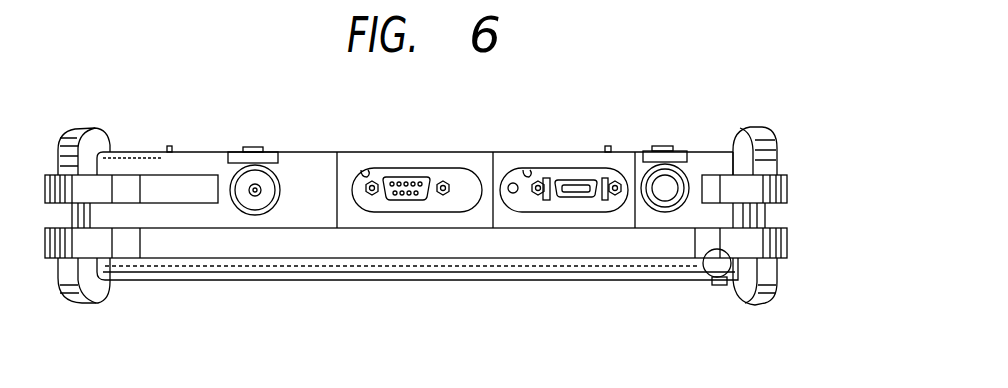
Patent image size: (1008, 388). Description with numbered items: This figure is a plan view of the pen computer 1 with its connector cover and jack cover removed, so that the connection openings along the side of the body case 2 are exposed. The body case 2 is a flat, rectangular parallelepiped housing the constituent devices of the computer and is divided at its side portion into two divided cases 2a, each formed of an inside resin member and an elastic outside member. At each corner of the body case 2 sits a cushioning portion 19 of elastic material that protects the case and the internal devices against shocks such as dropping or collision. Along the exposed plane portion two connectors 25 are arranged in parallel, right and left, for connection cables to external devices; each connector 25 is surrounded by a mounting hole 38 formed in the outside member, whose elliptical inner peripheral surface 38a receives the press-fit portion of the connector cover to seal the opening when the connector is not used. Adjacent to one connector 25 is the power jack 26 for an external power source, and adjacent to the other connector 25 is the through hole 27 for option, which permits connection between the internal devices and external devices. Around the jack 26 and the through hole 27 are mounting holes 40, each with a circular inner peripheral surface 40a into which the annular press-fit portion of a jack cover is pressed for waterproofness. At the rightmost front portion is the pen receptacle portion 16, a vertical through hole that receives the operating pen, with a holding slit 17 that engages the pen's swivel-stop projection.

The pen computer 1 is at (460, 284).
The body case 2 is at (392, 273).
The divided case 2a is at (183, 160).
The pen receptacle portion 16 is at (705, 266).
The holding slit 17 is at (717, 287).
The cushioning portion 19 is at (82, 128).
The connector 25 is at (407, 177).
The power jack 26 is at (253, 172).
The through hole for option 27 is at (663, 184).
The mounting hole 38 is at (463, 180).
The elliptical inner peripheral surface 38a is at (365, 170).
The mounting hole 40 is at (285, 172).
The circular inner peripheral surface 40a is at (233, 170).